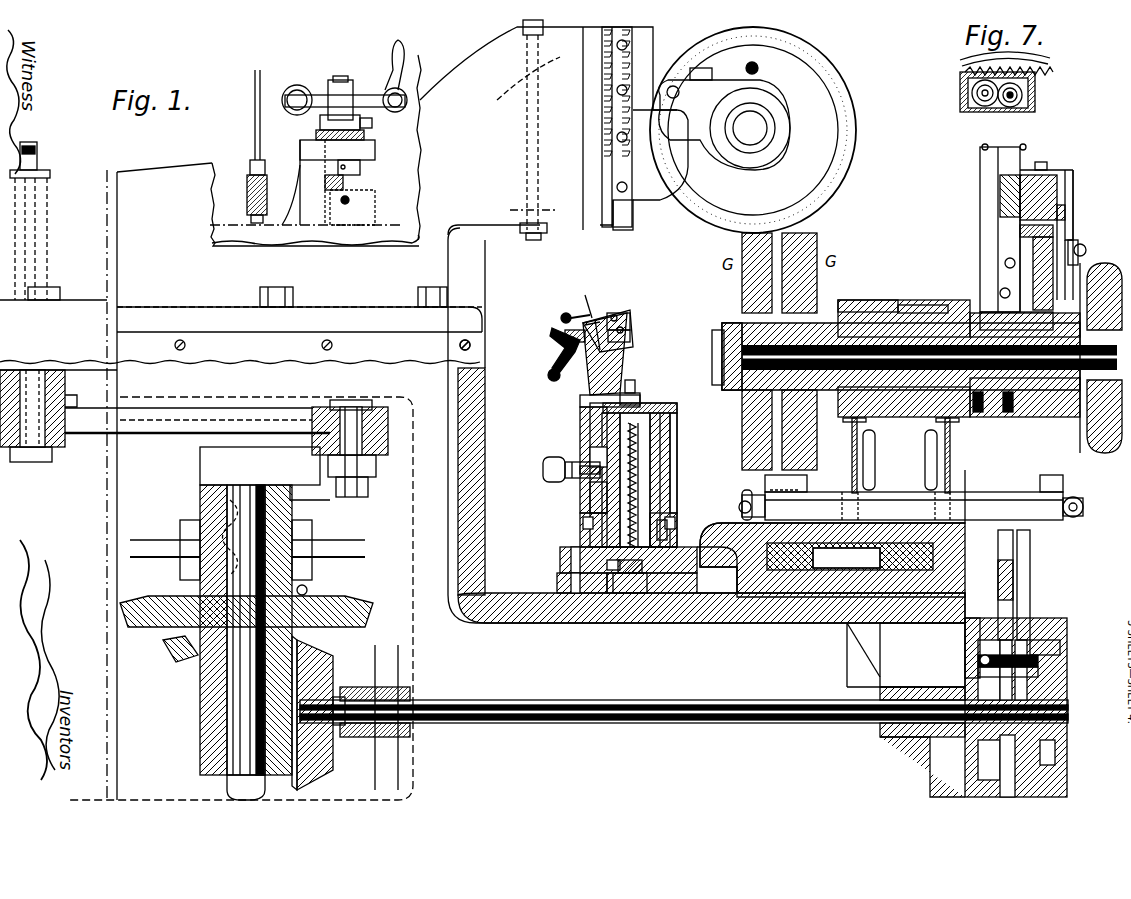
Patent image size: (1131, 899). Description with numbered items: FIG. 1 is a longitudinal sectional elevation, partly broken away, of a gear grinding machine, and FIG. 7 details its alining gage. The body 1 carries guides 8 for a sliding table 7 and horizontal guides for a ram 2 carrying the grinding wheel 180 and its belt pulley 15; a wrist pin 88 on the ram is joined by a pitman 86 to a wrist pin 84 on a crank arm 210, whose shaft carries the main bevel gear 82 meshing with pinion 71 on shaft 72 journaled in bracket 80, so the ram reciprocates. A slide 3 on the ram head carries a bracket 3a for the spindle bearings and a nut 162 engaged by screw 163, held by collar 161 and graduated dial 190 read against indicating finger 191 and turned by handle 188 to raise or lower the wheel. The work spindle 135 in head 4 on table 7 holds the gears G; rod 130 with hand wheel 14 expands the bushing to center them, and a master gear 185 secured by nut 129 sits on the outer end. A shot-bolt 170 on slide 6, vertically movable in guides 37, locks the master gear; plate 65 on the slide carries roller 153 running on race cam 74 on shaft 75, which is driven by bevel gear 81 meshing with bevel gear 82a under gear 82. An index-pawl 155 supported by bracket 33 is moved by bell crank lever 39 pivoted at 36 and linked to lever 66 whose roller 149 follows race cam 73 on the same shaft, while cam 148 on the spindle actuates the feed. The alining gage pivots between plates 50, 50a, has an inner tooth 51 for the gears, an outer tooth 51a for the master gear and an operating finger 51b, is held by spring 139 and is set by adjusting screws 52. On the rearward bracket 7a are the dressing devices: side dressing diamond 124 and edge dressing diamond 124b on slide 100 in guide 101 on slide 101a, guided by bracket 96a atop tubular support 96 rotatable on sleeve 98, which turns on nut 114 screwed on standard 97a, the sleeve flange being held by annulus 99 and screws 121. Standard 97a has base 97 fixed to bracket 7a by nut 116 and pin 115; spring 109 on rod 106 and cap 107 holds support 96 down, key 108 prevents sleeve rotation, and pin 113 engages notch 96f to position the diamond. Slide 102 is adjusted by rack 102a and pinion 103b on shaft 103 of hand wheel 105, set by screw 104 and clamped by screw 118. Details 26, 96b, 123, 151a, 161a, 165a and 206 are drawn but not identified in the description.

In FIG. 1, the base or body 1 is at (688, 615).
In FIG. 1, the ram 2 is at (548, 131).
In FIG. 1, the slide 3 is at (633, 218).
In FIG. 1, the bracket 3a is at (660, 155).
In FIG. 1, the head or bracket 4 is at (919, 350).
In FIG. 1, the slide 6 is at (1000, 200).
In FIG. 1, the sliding table 7 is at (748, 523).
In FIG. 1, the rearward extension or bracket 7a is at (557, 585).
In FIG. 1, the support or guides 8 is at (845, 568).
In FIG. 1, the hand wheel 14 is at (1082, 470).
In FIG. 1, the belt pulley 15 is at (793, 115).
In FIG. 1, the hub 26 is at (750, 128).
In FIG. 1, the bracket 33 is at (1045, 168).
In FIG. 1, the pivot 36 is at (1050, 285).
In FIG. 1, the guides 37 is at (978, 168).
In FIG. 1, the bell crank lever 39 is at (1060, 270).
In FIG. 1, the inner plate 50 is at (765, 507).
In FIG. 1, the outer plate 50a is at (1073, 520).
In FIG. 1, the inner tooth 51 is at (807, 482).
In FIG. 7, the inner tooth 51 is at (1022, 85).
In FIG. 1, the outer tooth 51a is at (1063, 480).
In FIG. 1, the operating finger 51b is at (1085, 505).
In FIG. 1, the adjusting screws 52 is at (858, 460).
In FIG. 1, the plate 65 is at (998, 552).
In FIG. 1, the lever 66 is at (1060, 645).
In FIG. 1, the pinion 71 is at (195, 540).
In FIG. 1, the shaft 72 is at (313, 535).
In FIG. 1, the race cam 73 is at (1067, 685).
In FIG. 1, the race cam 74 is at (985, 618).
In FIG. 1, the shaft 75 is at (695, 725).
In FIG. 1, the bracket 80 is at (200, 565).
In FIG. 1, the bevel gear 81 is at (333, 660).
In FIG. 1, the main bevel gear 82 is at (335, 595).
In FIG. 1, the bevel gear 82a is at (170, 655).
In FIG. 1, the wrist pin 84 is at (312, 460).
In FIG. 1, the pitman 86 is at (180, 428).
In FIG. 1, the wrist pin 88 is at (45, 416).
In FIG. 1, the tubular support 96 is at (677, 462).
In FIG. 1, the bracket 96a is at (580, 400).
In FIG. 1, the lug 96b is at (595, 485).
In FIG. 1, the notch 96f is at (670, 447).
In FIG. 1, the base 97 is at (557, 578).
In FIG. 1, the standard 97a is at (677, 435).
In FIG. 1, the sleeve 98 is at (590, 430).
In FIG. 1, the annulus 99 is at (667, 516).
In FIG. 1, the slide 100 is at (615, 313).
In FIG. 1, the guide 101 is at (633, 342).
In FIG. 1, the slide 101a is at (599, 295).
In FIG. 1, the slide 102 is at (584, 307).
In FIG. 1, the rack 102a is at (620, 378).
In FIG. 1, the shaft 103 is at (556, 345).
In FIG. 1, the pinion 103b is at (552, 324).
In FIG. 1, the screw 104 is at (565, 312).
In FIG. 1, the hand wheel 105 is at (550, 380).
In FIG. 1, the rod 106 is at (665, 403).
In FIG. 1, the cap 107 is at (655, 395).
In FIG. 1, the key 108 is at (590, 455).
In FIG. 1, the spring 109 is at (660, 490).
In FIG. 1, the pin 113 is at (575, 482).
In FIG. 1, the nut 114 is at (600, 560).
In FIG. 1, the pin 115 is at (571, 560).
In FIG. 1, the nut 116 is at (625, 595).
In FIG. 1, the screw 118 is at (630, 333).
In FIG. 1, the screws 121 is at (583, 530).
In FIG. 1, the nut 123 is at (712, 345).
In FIG. 1, the side dressing diamond 124 is at (642, 306).
In FIG. 1, the edge dressing diamond 124b is at (630, 325).
In FIG. 1, the nut 129 is at (1050, 300).
In FIG. 1, the rod 130 is at (918, 305).
In FIG. 1, the work spindle 135 is at (862, 300).
In FIG. 1, the spring 139 is at (740, 500).
In FIG. 7, the spring 139 is at (975, 98).
In FIG. 1, the cam 148 is at (985, 415).
In FIG. 1, the roller 149 is at (1038, 660).
In FIG. 7, the pin 151a is at (1025, 98).
In FIG. 1, the roller 153 is at (935, 651).
In FIG. 1, the index-pawl or rack 155 is at (1065, 213).
In FIG. 1, the collar 161 is at (378, 163).
In FIG. 1, the handwheel 161a is at (345, 150).
In FIG. 1, the nut 162 is at (378, 205).
In FIG. 1, the screw 163 is at (305, 200).
In FIG. 1, the nut 165a is at (545, 240).
In FIG. 1, the shot-bolt 170 is at (1050, 187).
In FIG. 1, the grinding wheel 180 is at (840, 75).
In FIG. 1, the master gear 185 is at (1085, 265).
In FIG. 7, the master gear 185 is at (1045, 70).
In FIG. 1, the handle 188 is at (405, 55).
In FIG. 1, the dial 190 is at (318, 133).
In FIG. 1, the indicating finger 191 is at (388, 128).
In FIG. 1, the key 206 is at (1008, 415).
In FIG. 1, the crank arm 210 is at (215, 470).